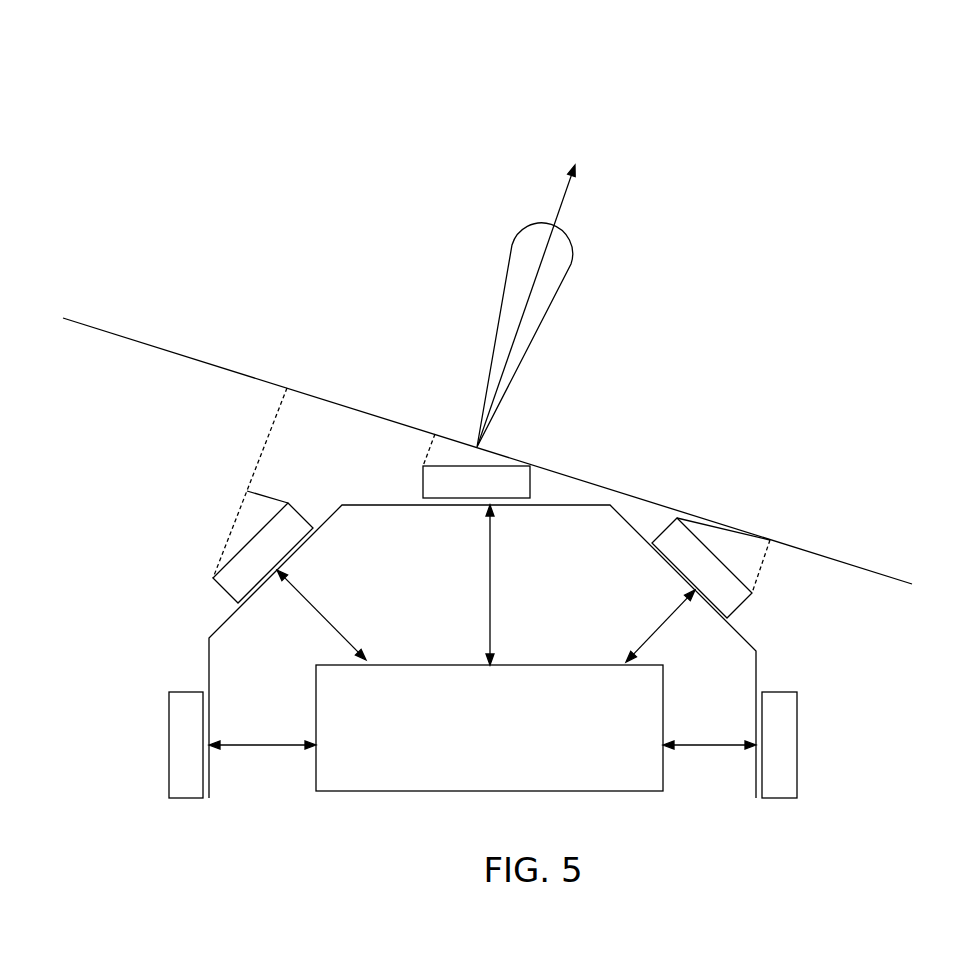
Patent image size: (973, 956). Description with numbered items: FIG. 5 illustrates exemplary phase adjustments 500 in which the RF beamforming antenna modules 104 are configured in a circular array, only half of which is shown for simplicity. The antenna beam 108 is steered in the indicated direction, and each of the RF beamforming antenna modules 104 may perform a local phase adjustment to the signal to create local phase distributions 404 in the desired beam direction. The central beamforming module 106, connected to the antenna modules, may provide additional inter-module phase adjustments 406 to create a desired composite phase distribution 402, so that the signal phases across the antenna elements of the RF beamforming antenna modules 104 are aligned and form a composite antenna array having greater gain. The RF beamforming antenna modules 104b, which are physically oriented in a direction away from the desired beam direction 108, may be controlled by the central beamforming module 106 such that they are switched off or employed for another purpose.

The phase adjustments 500 is at (520, 51).
The composite phase distribution 402 is at (173, 350).
The local phase distributions 404 is at (270, 502).
The inter-module phase adjustments 406 is at (255, 463).
The antenna beam 108 is at (575, 265).
The RF beamforming antenna modules 104 is at (463, 499).
The RF beamforming antenna modules oriented away from beam direction 104b is at (169, 745).
The central beamforming module 106 is at (476, 749).